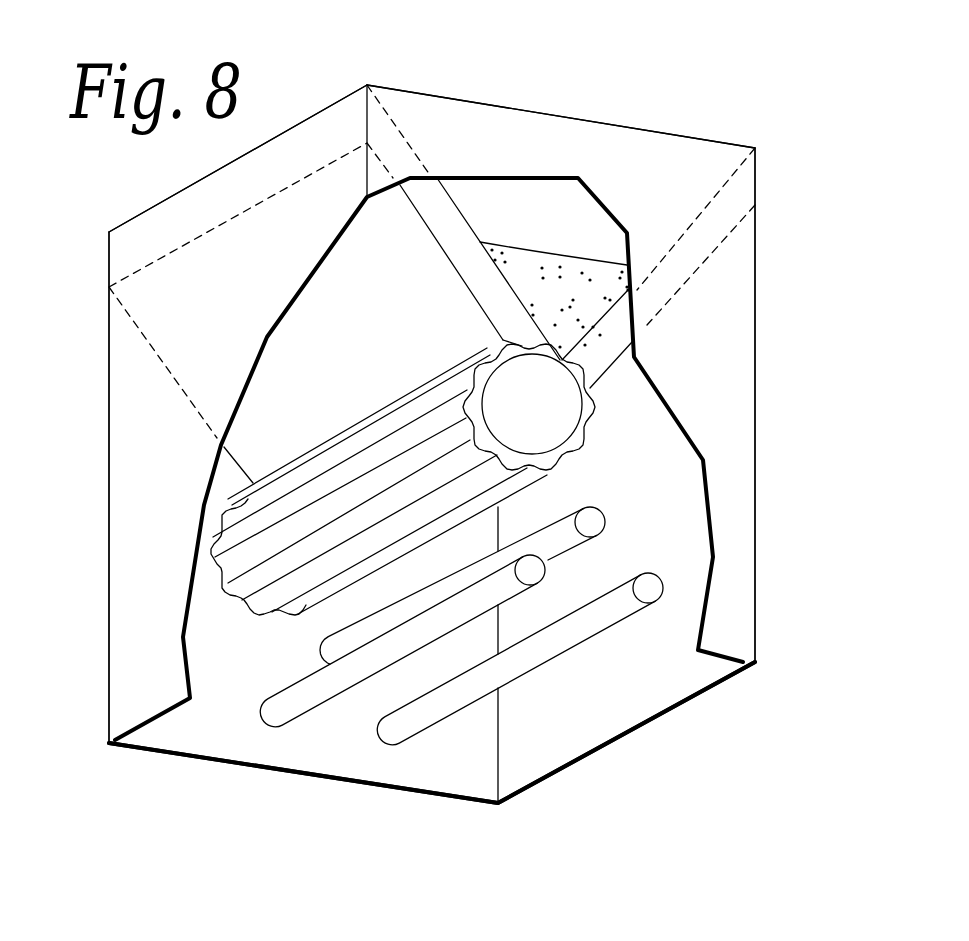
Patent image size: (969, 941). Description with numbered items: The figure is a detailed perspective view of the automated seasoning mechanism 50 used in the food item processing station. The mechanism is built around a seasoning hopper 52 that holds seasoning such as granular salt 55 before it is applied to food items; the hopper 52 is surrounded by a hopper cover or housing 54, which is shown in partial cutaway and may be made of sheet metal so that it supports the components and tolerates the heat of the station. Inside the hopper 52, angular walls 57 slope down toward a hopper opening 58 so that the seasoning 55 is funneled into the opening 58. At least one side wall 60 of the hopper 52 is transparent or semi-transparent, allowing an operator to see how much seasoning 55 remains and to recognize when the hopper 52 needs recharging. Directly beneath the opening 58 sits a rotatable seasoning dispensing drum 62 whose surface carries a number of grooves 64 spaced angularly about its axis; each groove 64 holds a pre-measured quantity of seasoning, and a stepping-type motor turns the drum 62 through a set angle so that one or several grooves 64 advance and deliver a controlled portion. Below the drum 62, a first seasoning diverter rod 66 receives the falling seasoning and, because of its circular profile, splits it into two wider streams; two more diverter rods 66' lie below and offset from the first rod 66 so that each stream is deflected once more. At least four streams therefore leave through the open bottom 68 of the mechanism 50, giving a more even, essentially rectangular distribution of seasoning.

The automated seasoning mechanism 50 is at (805, 201).
The seasoning hopper 52 is at (511, 225).
The hopper cover or housing 54 is at (128, 420).
The granular salt (seasoning) 55 is at (582, 313).
The angular walls 57 is at (443, 220).
The hopper opening 58 is at (558, 352).
The side wall 60 is at (727, 293).
The seasoning dispensing drum 62 is at (533, 403).
The grooves 64 is at (590, 415).
The seasoning diverter rod 66 is at (588, 552).
The offset diverter rods 66' is at (461, 730).
The open bottom 68 is at (620, 718).